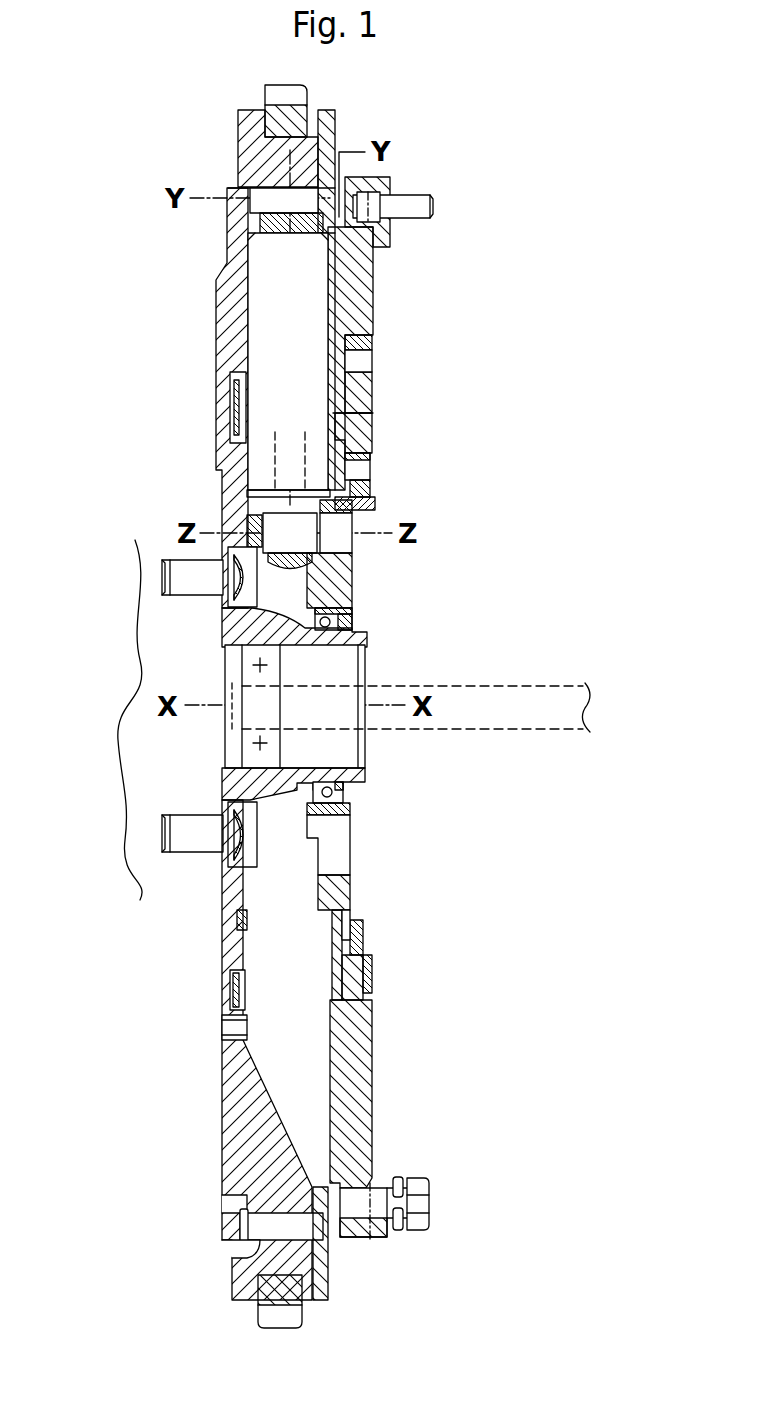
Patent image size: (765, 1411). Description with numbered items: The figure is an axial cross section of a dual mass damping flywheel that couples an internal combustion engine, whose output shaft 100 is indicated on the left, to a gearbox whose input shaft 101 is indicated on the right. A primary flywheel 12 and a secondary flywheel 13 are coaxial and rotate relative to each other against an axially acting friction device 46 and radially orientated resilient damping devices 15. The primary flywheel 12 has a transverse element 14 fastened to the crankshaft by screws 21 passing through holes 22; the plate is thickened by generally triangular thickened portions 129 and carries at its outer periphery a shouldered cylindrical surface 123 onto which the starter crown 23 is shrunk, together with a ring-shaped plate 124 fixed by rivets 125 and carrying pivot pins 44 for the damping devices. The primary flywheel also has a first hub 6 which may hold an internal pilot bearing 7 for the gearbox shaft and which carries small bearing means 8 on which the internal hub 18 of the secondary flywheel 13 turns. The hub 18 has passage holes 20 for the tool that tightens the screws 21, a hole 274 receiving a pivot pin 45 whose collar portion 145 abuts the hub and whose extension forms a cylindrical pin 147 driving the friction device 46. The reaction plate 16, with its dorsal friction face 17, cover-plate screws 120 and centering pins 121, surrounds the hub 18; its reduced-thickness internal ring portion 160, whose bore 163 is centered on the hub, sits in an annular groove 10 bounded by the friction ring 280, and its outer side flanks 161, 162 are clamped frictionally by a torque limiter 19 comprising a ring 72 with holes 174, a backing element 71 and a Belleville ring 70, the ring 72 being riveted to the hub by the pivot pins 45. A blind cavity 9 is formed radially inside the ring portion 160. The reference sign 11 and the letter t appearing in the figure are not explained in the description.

The first hub 6 is at (367, 634).
The internal pilot bearing 7 is at (233, 740).
The bearing means 8 is at (347, 795).
The cavity 9 is at (356, 490).
The annular groove 10 is at (352, 413).
The upper housing 11 is at (296, 343).
The primary flywheel 12 is at (224, 1050).
The secondary flywheel 13 is at (375, 1135).
The transverse element 14 is at (217, 343).
The resilient damping devices 15 is at (262, 268).
The reaction plate 16 is at (362, 300).
The dorsal friction face 17 is at (373, 263).
The internal hub 18 is at (354, 606).
The torque limiter 19 is at (368, 955).
The passage holes 20 is at (330, 815).
The fastening members 21 is at (165, 834).
The holes 22 is at (223, 828).
The starter crown 23 is at (297, 108).
The pivot pin 44 is at (235, 205).
The pivot pin 45 is at (278, 545).
The axially acting friction device 46 is at (232, 982).
The axially acting resilient means 70 is at (356, 470).
The backing element 71 is at (380, 498).
The ring 72 is at (350, 893).
The output shaft of the engine 100 is at (140, 616).
The input shaft of the gearbox 101 is at (530, 722).
The screws 120 is at (428, 1203).
The pins 121 is at (413, 195).
The shouldered cylindrical surface 123 is at (265, 124).
The plate in the form of a ring 124 is at (330, 1282).
The rivets 125 is at (243, 1225).
The thickened portions 129 is at (232, 1170).
The collar portion 145 is at (353, 566).
The cylindrical pins 147 is at (262, 532).
The internal annular ring portion 160 is at (370, 380).
The outer side flank 161 is at (368, 432).
The outer side flank 162 is at (336, 980).
The cylindrical internal bore 163 is at (364, 938).
The holes 174 is at (358, 542).
The hole 274 is at (247, 488).
The friction ring 280 is at (371, 965).
The gap thickness t is at (348, 360).